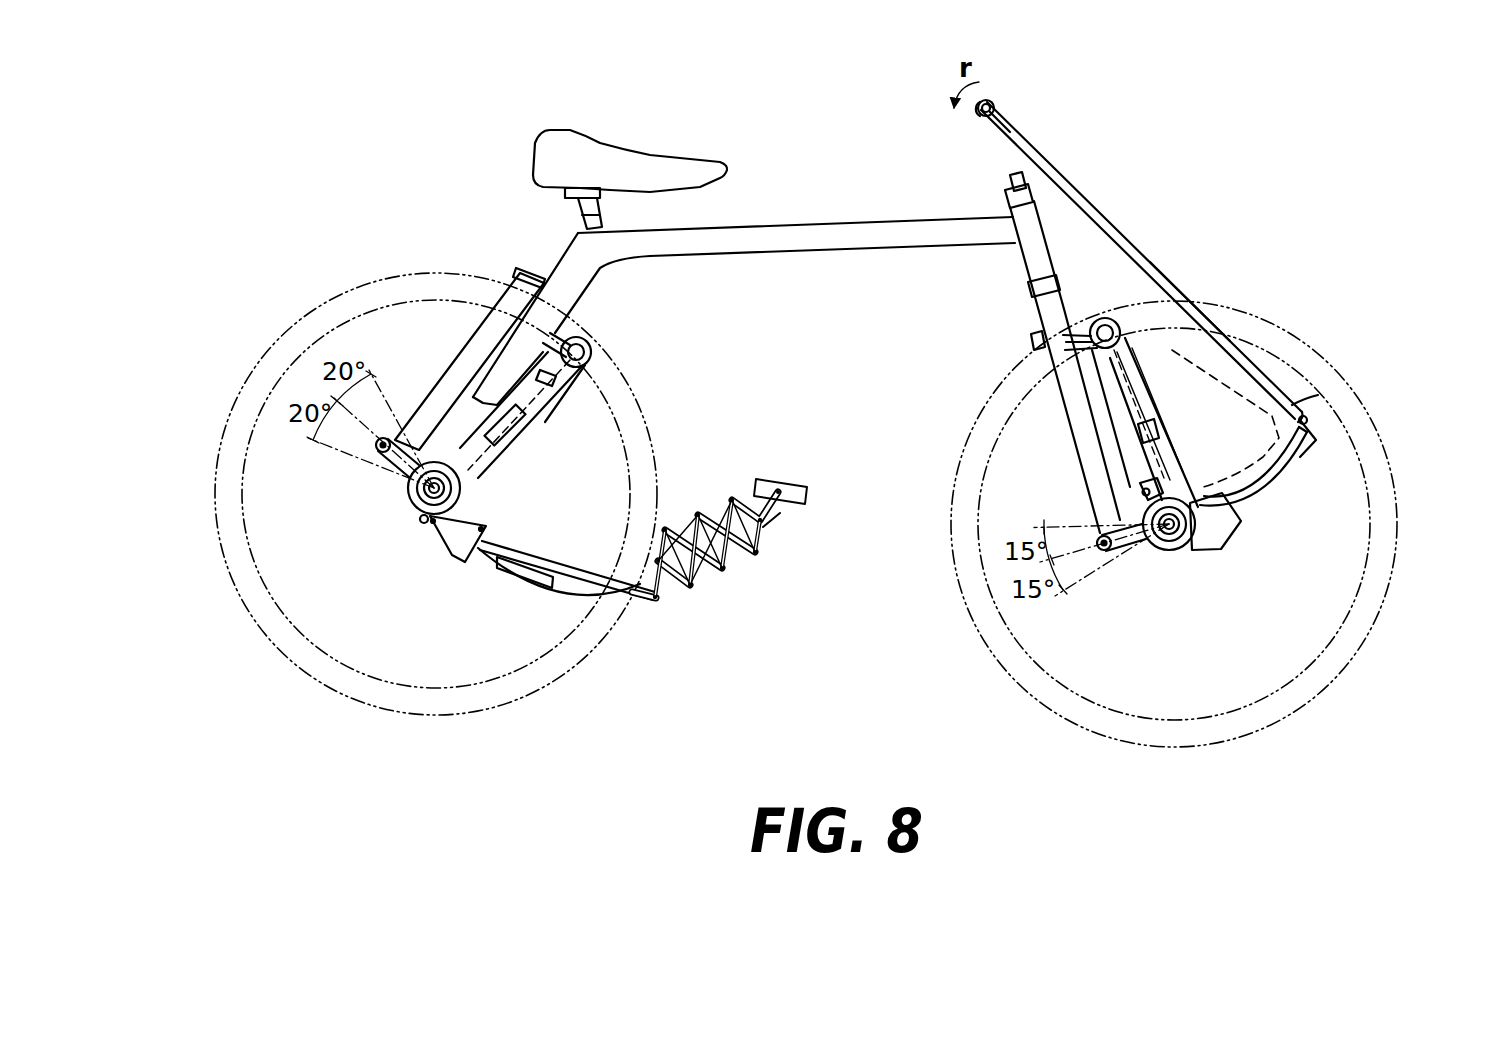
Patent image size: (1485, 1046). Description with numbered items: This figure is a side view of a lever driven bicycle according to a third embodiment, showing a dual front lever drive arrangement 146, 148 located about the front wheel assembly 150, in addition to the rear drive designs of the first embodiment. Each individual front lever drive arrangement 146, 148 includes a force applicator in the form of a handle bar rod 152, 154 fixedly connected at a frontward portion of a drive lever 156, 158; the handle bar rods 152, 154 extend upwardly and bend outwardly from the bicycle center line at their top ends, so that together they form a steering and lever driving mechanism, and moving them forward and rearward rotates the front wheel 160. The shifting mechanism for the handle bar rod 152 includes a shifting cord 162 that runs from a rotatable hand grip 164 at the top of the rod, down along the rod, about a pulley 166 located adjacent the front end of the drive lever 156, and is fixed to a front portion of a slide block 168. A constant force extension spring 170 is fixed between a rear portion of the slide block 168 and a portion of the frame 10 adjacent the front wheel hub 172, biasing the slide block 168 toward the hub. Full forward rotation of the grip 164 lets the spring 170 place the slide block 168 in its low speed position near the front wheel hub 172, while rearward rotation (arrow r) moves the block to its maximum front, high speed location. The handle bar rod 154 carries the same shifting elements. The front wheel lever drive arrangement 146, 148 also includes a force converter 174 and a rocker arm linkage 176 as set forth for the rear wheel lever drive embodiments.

The frame 10 is at (835, 238).
The front lever drive arrangement 146 is at (1182, 180).
The front lever drive arrangement 148 is at (981, 146).
The front wheel assembly 150 is at (1303, 320).
The handle bar rod 152 is at (1173, 296).
The handle bar rod 154 is at (1013, 172).
The drive lever 156 is at (1281, 493).
The drive lever 158 is at (1263, 458).
The front wheel 160 is at (1315, 398).
The shifting cord 162 is at (1088, 186).
The rotatable hand grip 164 is at (990, 99).
The pulley 166 is at (1307, 418).
The slide block 168 is at (1218, 520).
The constant force extension spring 170 is at (1163, 486).
The front wheel hub 172 is at (1150, 540).
The force converter 174 is at (1160, 368).
The rocker arm linkage 176 is at (1037, 397).